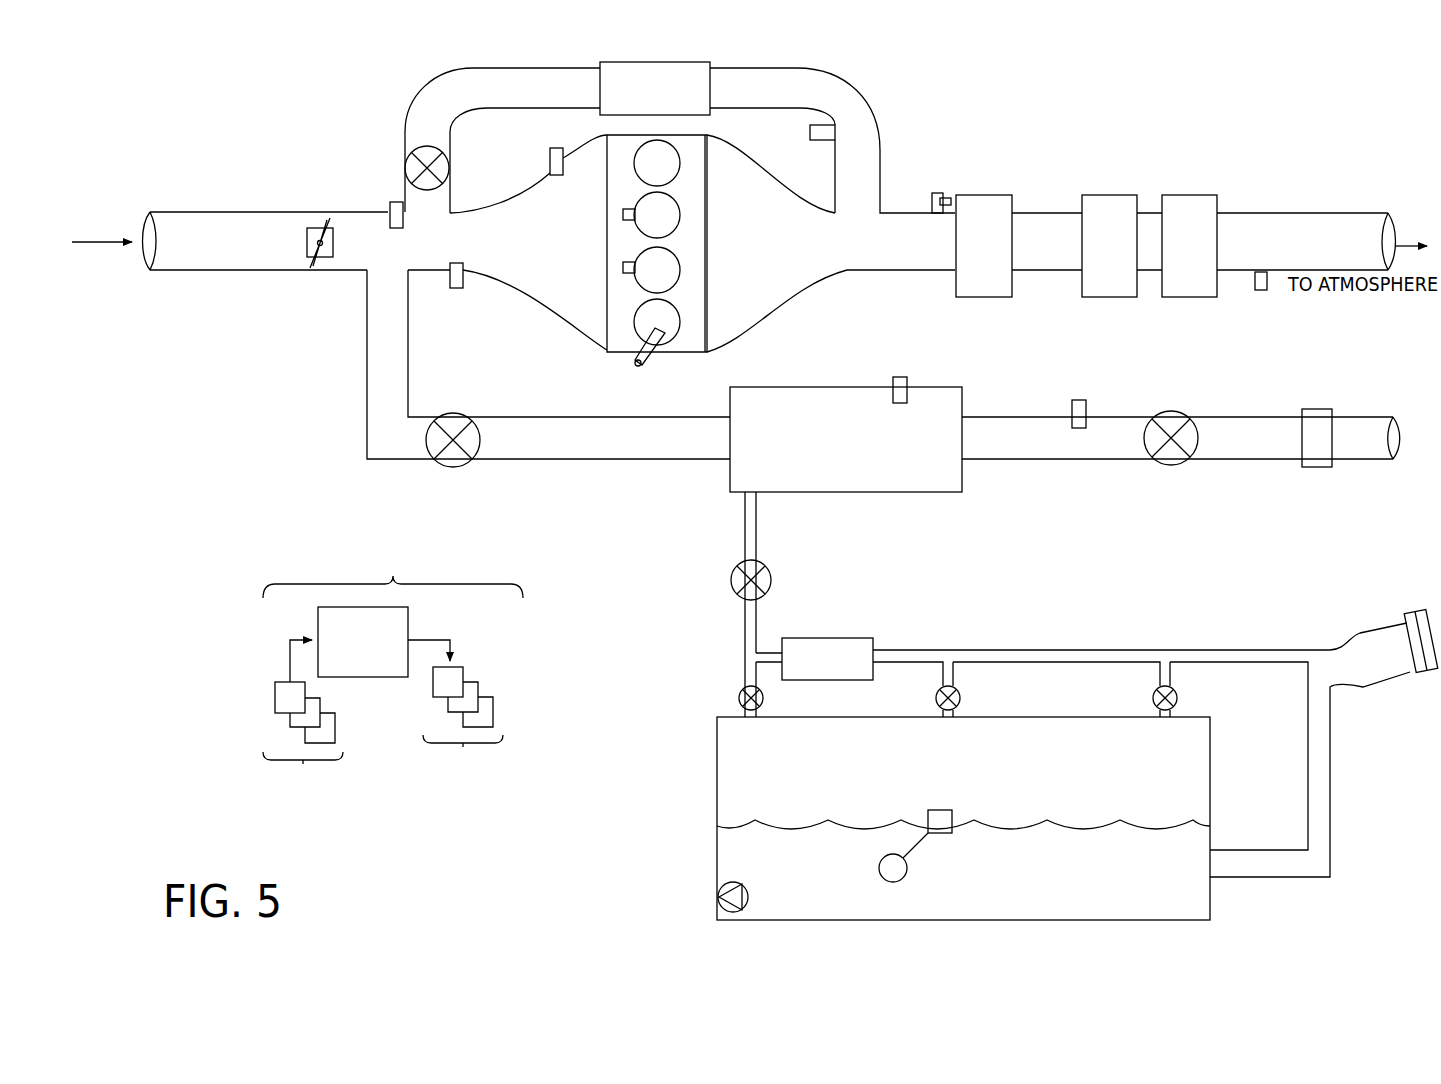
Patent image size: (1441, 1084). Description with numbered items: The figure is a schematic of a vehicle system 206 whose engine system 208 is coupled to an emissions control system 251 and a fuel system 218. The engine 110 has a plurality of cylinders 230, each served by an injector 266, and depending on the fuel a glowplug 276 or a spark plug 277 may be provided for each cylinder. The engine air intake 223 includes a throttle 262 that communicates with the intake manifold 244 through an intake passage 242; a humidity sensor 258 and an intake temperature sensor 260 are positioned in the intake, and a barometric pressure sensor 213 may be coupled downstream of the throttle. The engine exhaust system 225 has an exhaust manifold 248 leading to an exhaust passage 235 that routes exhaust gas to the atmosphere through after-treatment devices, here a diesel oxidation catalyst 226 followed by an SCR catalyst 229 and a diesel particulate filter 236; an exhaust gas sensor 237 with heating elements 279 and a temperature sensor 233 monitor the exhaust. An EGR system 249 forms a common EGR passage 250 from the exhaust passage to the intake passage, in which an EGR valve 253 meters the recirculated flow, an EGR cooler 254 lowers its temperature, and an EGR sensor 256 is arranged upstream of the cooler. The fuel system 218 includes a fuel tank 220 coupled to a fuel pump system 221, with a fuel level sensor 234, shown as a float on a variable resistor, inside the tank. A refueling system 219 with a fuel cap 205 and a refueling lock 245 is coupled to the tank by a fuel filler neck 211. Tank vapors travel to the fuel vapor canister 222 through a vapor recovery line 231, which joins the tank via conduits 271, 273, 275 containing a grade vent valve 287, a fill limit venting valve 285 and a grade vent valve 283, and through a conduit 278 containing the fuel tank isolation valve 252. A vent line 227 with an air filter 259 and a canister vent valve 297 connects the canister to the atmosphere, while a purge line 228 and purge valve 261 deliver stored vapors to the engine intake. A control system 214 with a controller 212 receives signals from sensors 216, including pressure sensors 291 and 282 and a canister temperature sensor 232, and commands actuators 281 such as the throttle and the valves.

The vehicle system 206 is at (240, 113).
The engine system 208 is at (957, 143).
The engine 110 is at (707, 220).
The cylinders 230 is at (681, 155).
The intake passage 242 is at (362, 272).
The engine intake manifold 244 is at (527, 258).
The exhaust manifold 248 is at (792, 252).
The exhaust gas recirculation (EGR) system 249 is at (398, 113).
The EGR passage 250 is at (769, 101).
The EGR valve 253 is at (406, 158).
The EGR cooler 254 is at (655, 88).
The EGR sensor 256 is at (810, 132).
The humidity sensor 258 is at (390, 206).
The intake temperature sensor 260 is at (457, 290).
The throttle 262 is at (333, 252).
The barometric pressure sensor 213 is at (553, 148).
The glowplug 276 is at (623, 214).
The spark plug 277 is at (623, 267).
The injector 266 is at (648, 352).
The engine air intake system 223 is at (531, 306).
The engine exhaust system 225 is at (800, 300).
The diesel oxidation catalyst (DOC) 226 is at (988, 195).
The selective catalytic reduction (SCR) catalyst 229 is at (1120, 195).
The diesel particulate filter (DPF) 236 is at (1200, 195).
The exhaust gas sensor 237 is at (933, 198).
The heating elements 279 is at (948, 198).
The temperature sensor 233 is at (1256, 284).
The exhaust passage 235 is at (1357, 213).
The emissions control system 251 is at (1381, 366).
The fuel vapor canister 222 is at (963, 410).
The canister temperature sensor 232 is at (898, 377).
The purge line 228 is at (576, 447).
The canister purge valve 261 is at (458, 414).
The vent line 227 is at (1044, 446).
The pressure sensor 282 is at (1077, 400).
The canister vent valve 297 is at (1177, 412).
The air filter 259 is at (1322, 409).
The conduit 278 is at (745, 522).
The fuel tank isolation valve (FTIV) 252 is at (741, 594).
The conduit 271 is at (760, 672).
The conduit 273 is at (940, 676).
The conduit 275 is at (1157, 672).
The grade vent valve (GVV) 287 is at (738, 698).
The fill limit venting valve (FLVV) 285 is at (960, 694).
The grade vent valve (GVV) 283 is at (1176, 692).
The pressure sensor 291 is at (873, 646).
The vapor recovery line 231 is at (1228, 648).
The fuel filler pipe 211 is at (1333, 765).
The fuel cap 205 is at (1417, 611).
The refueling system 219 is at (1385, 607).
The refueling lock 245 is at (1415, 670).
The fuel system 218 is at (1352, 842).
The fuel tank 220 is at (1210, 816).
The fuel pump system 221 is at (728, 884).
The fuel level sensor 234 is at (945, 810).
The control system 214 is at (393, 565).
The controller 212 is at (370, 644).
The sensors 216 is at (303, 744).
The actuators 281 is at (463, 728).